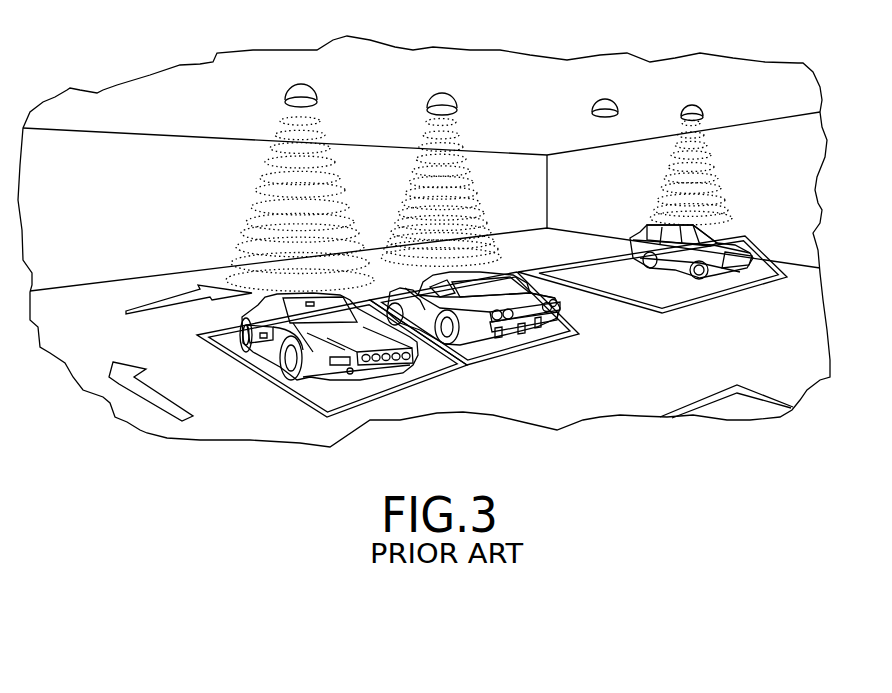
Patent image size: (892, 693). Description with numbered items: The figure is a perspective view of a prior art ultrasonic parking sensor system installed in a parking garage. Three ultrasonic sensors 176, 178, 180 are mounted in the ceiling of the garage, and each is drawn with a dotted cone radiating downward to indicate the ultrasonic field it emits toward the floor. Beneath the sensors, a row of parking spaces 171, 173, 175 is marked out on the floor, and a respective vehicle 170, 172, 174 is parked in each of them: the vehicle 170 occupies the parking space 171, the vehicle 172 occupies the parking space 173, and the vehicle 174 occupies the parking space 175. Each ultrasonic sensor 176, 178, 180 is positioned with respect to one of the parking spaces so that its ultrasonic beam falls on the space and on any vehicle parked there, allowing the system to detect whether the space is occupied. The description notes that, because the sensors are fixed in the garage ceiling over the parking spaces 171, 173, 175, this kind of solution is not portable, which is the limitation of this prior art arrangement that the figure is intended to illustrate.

The vehicle 170 is at (257, 356).
The parking space 171 is at (323, 393).
The vehicle 172 is at (580, 298).
The parking space 173 is at (502, 346).
The vehicle 174 is at (734, 228).
The parking space 175 is at (730, 283).
The ultrasonic sensor 176 is at (300, 78).
The ultrasonic sensor 178 is at (443, 86).
The ultrasonic sensor 180 is at (694, 92).